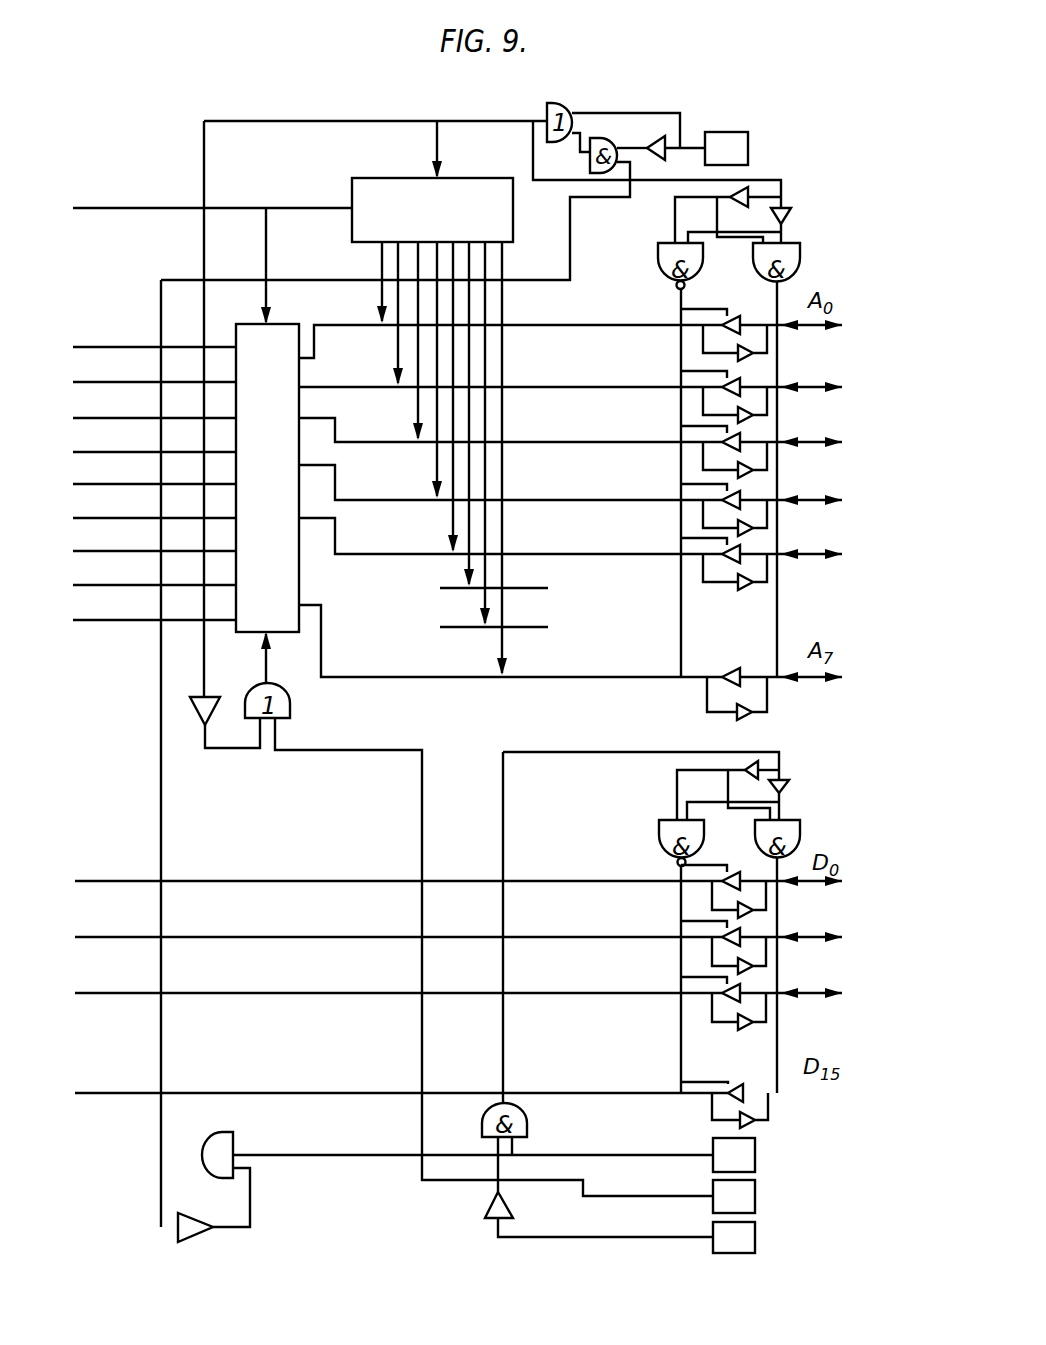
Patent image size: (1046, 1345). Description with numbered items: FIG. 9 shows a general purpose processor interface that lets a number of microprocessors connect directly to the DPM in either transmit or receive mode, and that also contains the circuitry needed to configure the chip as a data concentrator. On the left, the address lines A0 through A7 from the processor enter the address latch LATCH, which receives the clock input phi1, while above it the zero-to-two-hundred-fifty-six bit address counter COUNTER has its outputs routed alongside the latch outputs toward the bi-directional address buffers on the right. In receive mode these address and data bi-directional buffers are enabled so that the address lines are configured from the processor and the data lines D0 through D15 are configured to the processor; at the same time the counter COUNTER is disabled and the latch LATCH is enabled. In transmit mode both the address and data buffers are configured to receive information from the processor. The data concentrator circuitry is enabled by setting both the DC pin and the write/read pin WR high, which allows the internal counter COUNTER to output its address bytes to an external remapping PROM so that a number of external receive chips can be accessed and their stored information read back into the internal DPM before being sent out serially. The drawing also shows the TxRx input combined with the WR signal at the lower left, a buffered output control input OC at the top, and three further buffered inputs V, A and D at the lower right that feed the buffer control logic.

The address latch LATCH is at (283, 568).
The 0-256 bit address counter COUNTER is at (432, 210).
The output control buffer OC is at (748, 148).
The clock phase 1 input phi1 is at (211, 187).
The address line A0 is at (153, 331).
The address line A7 is at (153, 642).
The data line D0 is at (398, 864).
The data line D15 is at (401, 1075).
The DC pin DC is at (842, 1093).
The W/R pin WR is at (202, 1153).
The transmit/receive buffer TxRx is at (178, 1227).
The V buffer V is at (755, 1155).
The A buffer A is at (755, 1196).
The D buffer D is at (755, 1238).